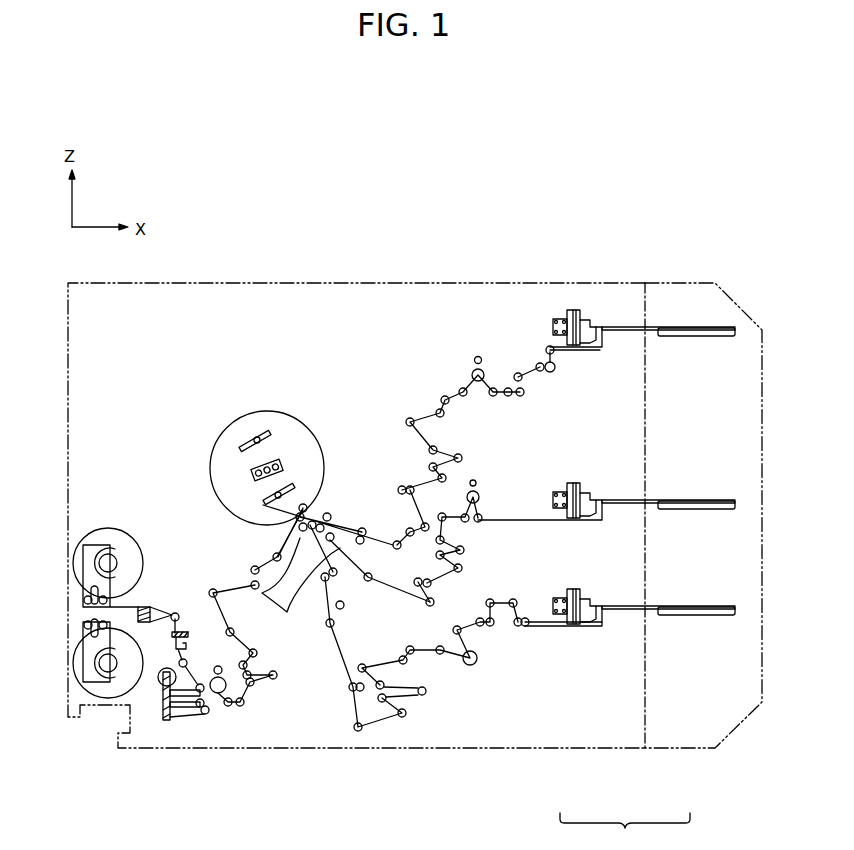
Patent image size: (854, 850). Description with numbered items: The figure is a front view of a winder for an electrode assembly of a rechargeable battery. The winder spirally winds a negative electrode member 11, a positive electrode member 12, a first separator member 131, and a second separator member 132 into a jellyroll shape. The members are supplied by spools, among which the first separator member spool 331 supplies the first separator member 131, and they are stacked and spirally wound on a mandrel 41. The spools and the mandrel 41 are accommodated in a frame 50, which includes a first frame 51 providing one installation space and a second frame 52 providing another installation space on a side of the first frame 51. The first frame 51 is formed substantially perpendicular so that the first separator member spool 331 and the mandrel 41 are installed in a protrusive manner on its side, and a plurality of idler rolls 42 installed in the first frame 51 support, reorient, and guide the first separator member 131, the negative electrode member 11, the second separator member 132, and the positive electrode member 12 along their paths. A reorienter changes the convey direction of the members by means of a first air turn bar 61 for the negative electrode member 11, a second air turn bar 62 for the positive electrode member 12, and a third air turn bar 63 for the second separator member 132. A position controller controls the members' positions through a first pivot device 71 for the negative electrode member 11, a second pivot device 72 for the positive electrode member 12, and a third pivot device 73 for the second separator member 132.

The negative electrode member 11 is at (338, 655).
The positive electrode member 12 is at (378, 540).
The mandrel 41 is at (288, 433).
The idler rolls 42 is at (287, 600).
The frame 50 is at (625, 831).
The first frame 51 is at (567, 727).
The second frame 52 is at (677, 727).
The first air turn bar 61 is at (697, 616).
The second air turn bar 62 is at (697, 337).
The third air turn bar 63 is at (697, 510).
The first pivot device 71 is at (590, 586).
The second pivot device 72 is at (590, 304).
The third pivot device 73 is at (590, 480).
The first separator member 131 is at (212, 590).
The second separator member 132 is at (392, 593).
The first separator member spool 331 is at (110, 535).